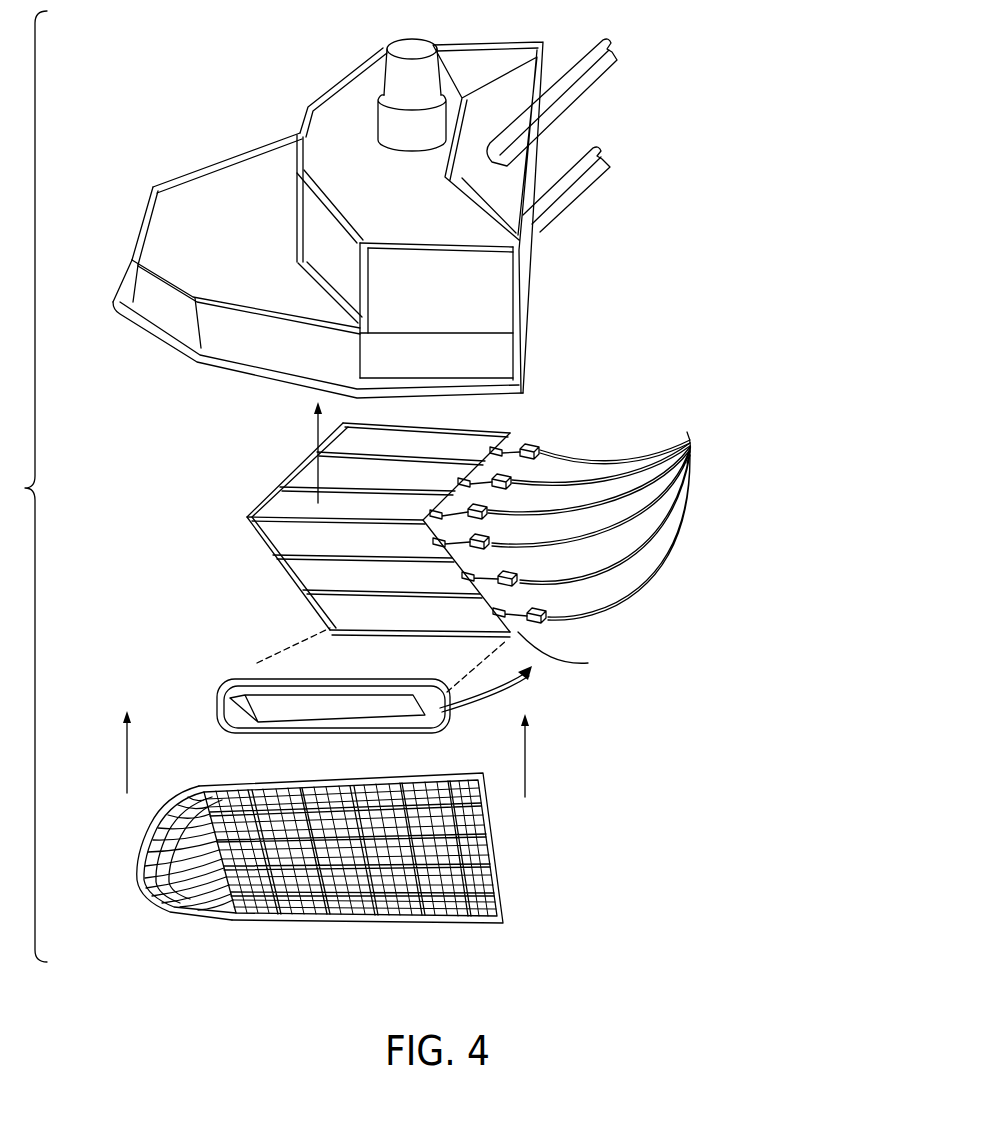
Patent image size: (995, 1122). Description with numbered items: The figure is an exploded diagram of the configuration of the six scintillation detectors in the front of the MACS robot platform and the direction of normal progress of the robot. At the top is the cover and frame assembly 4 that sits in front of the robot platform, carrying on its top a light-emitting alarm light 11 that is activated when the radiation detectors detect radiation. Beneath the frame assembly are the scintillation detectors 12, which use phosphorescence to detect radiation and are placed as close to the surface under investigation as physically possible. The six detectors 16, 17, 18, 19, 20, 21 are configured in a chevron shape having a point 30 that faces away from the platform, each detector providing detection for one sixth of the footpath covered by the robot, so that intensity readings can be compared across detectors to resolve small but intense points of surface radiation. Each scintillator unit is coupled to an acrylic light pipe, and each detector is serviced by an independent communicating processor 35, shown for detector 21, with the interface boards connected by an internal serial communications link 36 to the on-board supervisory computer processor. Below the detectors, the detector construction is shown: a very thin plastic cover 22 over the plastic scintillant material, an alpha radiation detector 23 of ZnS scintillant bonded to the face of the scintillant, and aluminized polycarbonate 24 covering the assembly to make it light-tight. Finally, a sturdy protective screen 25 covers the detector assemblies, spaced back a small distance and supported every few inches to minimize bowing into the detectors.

The cover and frame assembly 4 is at (140, 213).
The light-emitting alarm light 11 is at (395, 82).
The scintillation detectors 12 is at (315, 615).
The detector 16 is at (410, 624).
The detector 17 is at (388, 587).
The detector 18 is at (365, 551).
The detector 19 is at (365, 516).
The detector 20 is at (385, 484).
The detector 21 is at (420, 452).
The plastic cover 22 is at (253, 680).
The alpha radiation detector 23 is at (232, 697).
The aluminized polycarbonate 24 is at (256, 735).
The protective screen 25 is at (240, 924).
The point 30 is at (240, 480).
The communicating processor 35 is at (512, 437).
The RS-232 communications link 36 is at (600, 460).